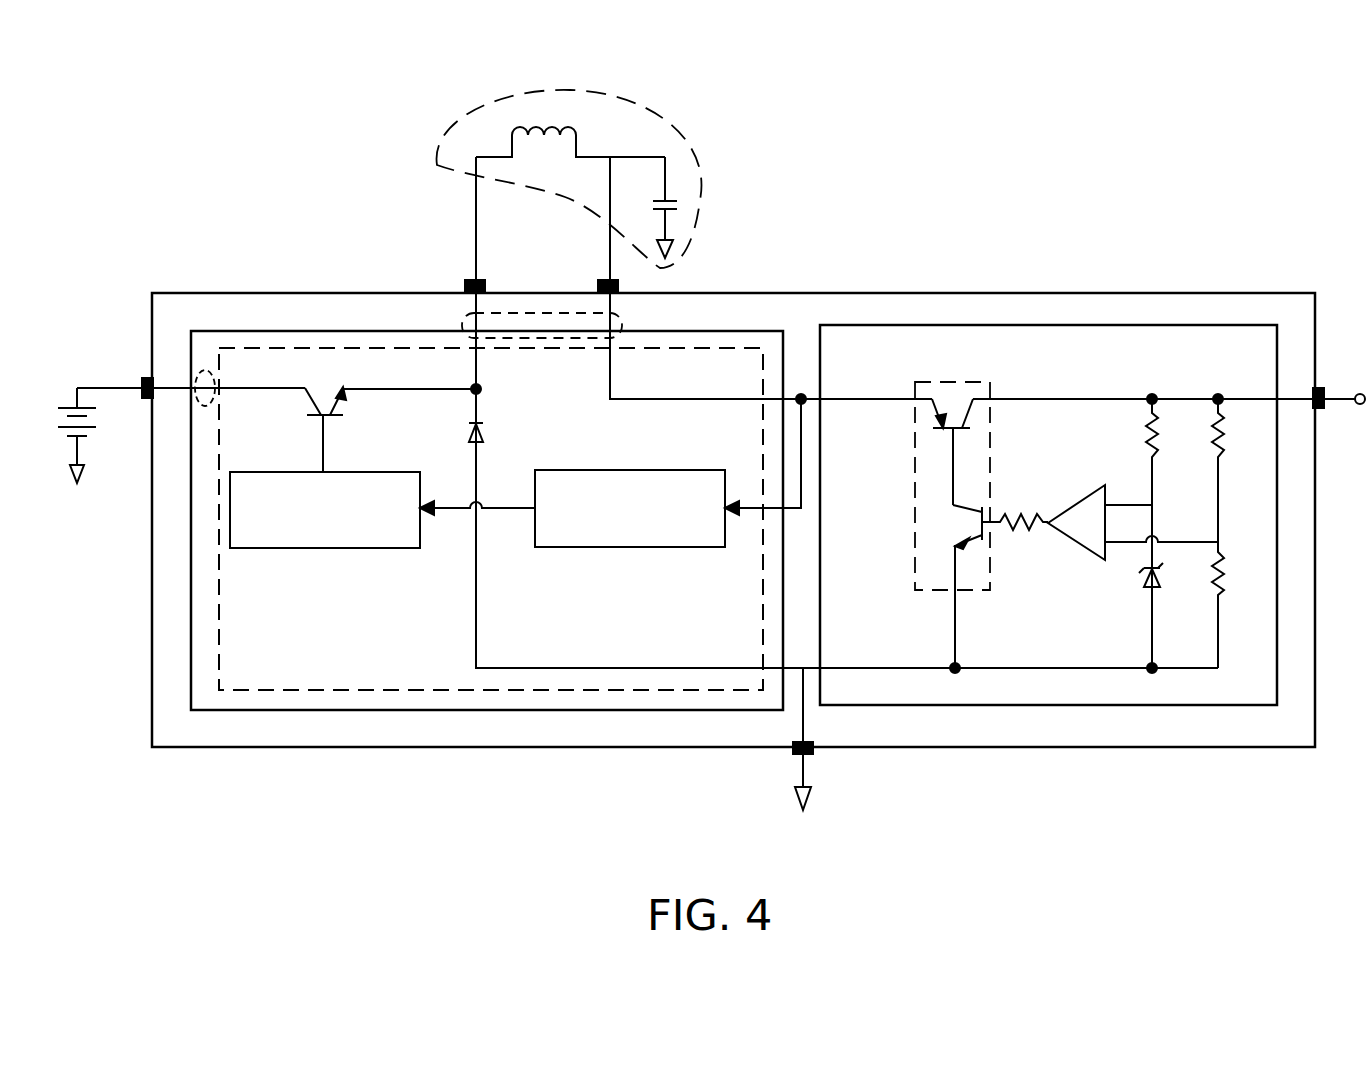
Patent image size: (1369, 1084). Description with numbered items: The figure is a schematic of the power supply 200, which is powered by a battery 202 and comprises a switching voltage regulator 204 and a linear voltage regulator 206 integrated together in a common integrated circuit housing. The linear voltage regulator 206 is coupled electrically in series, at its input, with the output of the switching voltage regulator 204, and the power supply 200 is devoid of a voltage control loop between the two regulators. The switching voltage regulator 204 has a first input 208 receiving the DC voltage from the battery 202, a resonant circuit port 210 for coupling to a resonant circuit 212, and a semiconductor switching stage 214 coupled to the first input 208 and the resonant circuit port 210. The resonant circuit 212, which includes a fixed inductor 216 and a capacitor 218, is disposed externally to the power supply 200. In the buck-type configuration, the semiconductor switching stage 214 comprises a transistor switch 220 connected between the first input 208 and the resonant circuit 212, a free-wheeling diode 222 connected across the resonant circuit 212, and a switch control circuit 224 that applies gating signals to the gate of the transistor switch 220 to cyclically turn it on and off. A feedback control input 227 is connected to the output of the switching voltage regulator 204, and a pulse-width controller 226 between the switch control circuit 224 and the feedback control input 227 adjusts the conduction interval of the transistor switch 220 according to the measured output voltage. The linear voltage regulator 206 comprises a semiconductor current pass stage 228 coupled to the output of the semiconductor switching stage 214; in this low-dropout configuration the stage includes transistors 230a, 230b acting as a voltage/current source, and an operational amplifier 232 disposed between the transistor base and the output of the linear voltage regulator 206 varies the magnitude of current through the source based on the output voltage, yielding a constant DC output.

The power supply 200 is at (628, 747).
The battery 202 is at (68, 406).
The switching voltage regulator 204 is at (355, 710).
The linear voltage regulator 206 is at (923, 705).
The first input 208 is at (217, 393).
The resonant circuit port 210 is at (612, 313).
The resonant circuit 212 is at (695, 170).
The semiconductor switching stage 214 is at (345, 644).
The fixed inductor 216 is at (576, 135).
The capacitor 218 is at (677, 205).
The transistor switch 220 is at (337, 420).
The free-wheeling diode 222 is at (482, 425).
The switch control circuit 224 is at (360, 548).
The pulse-width controller 226 is at (660, 547).
The feedback control input 227 is at (801, 508).
The semiconductor current pass stage 228 is at (990, 577).
The transistor 230a is at (967, 430).
The transistor 230b is at (973, 540).
The operational amplifier 232 is at (1088, 487).